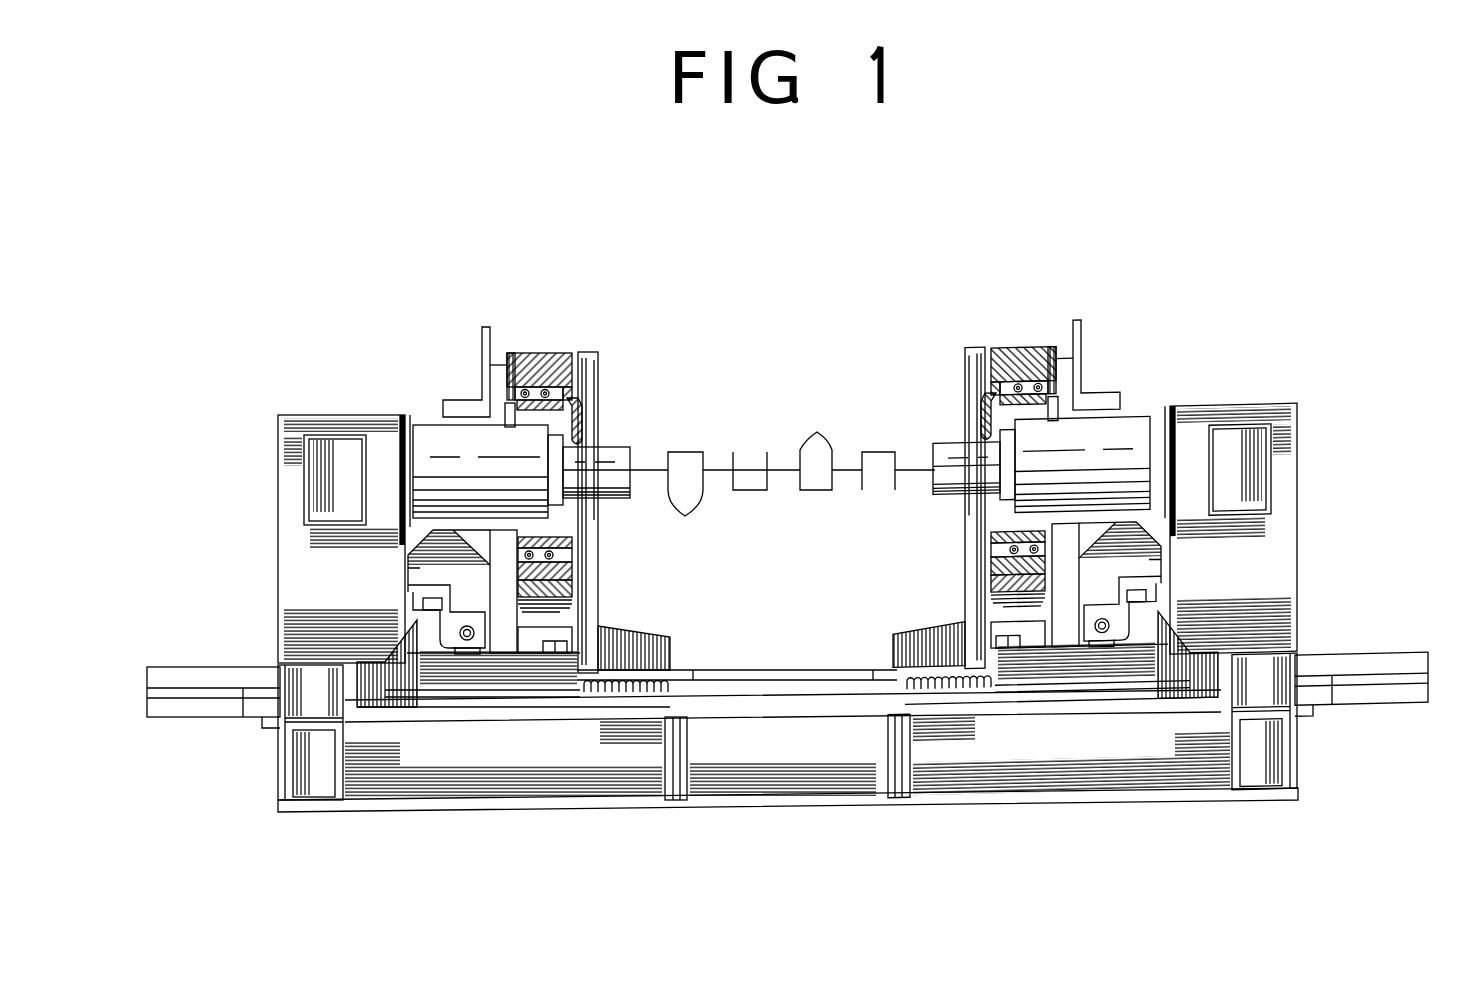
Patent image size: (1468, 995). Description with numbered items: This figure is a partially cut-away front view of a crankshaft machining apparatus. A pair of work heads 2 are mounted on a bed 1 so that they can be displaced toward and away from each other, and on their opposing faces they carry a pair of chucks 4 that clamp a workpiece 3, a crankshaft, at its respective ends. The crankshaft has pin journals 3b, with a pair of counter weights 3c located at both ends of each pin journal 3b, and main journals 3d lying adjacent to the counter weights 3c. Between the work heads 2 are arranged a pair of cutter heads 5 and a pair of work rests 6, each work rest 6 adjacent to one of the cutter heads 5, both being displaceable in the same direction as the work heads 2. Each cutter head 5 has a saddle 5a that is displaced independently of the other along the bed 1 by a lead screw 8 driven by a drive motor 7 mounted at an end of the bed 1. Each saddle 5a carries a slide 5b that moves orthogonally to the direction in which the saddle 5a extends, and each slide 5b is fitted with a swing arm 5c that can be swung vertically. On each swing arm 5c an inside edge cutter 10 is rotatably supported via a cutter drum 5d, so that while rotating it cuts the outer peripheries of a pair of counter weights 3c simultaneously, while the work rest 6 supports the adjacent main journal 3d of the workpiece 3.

The bed 1 is at (641, 812).
The work heads 2 is at (300, 578).
The workpiece 3 is at (778, 456).
The pin journal 3b is at (683, 452).
The counter weights 3c is at (822, 426).
The main journal 3d is at (718, 468).
The chucks 4 is at (613, 497).
The cutter heads 5 is at (537, 348).
The saddles 5a is at (471, 673).
The slides 5b is at (418, 565).
The swing arm 5c is at (512, 352).
The cutter drum 5d is at (503, 402).
The work rests 6 is at (593, 352).
The drive motors 7 is at (250, 717).
The lead screws 8 is at (631, 690).
The inside edge cutter 10 is at (580, 418).